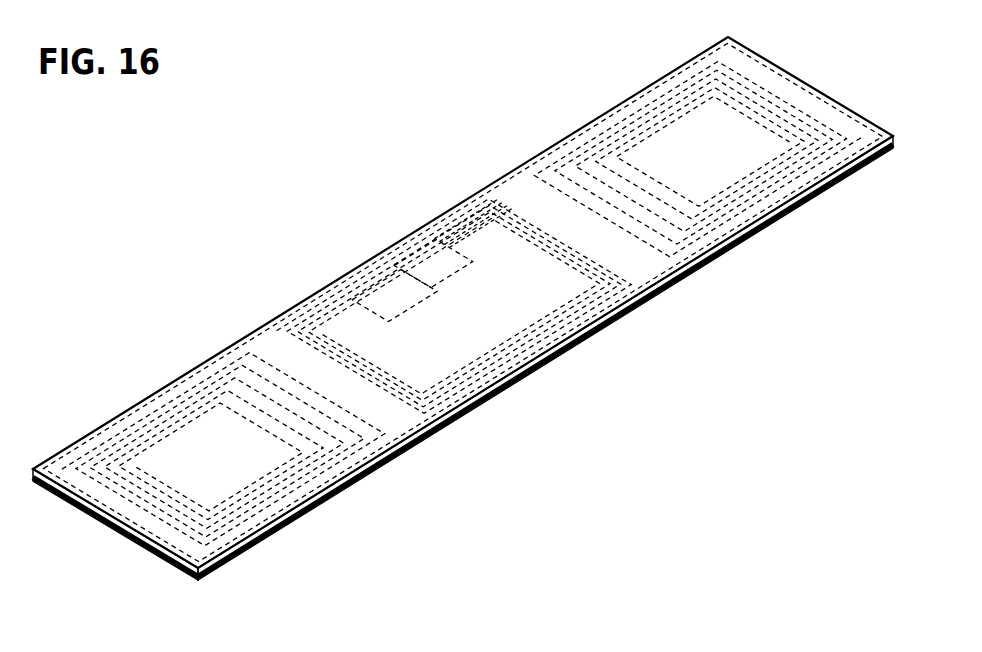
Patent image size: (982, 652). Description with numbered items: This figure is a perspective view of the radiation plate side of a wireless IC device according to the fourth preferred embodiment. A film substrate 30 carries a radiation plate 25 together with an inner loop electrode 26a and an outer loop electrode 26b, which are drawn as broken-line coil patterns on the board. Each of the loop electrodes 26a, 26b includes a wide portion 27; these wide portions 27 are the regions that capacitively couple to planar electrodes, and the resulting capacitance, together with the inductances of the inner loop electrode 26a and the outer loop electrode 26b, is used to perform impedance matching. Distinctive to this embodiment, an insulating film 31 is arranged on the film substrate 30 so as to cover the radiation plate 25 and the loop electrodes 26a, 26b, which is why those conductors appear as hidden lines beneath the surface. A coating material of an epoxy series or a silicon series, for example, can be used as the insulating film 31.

The radiation plate 25 is at (158, 402).
The inner loop electrode 26a is at (511, 236).
The outer loop electrode 26b is at (520, 218).
The wide portion 27 is at (375, 292).
The film substrate 30 is at (366, 478).
The insulating film 31 is at (245, 346).